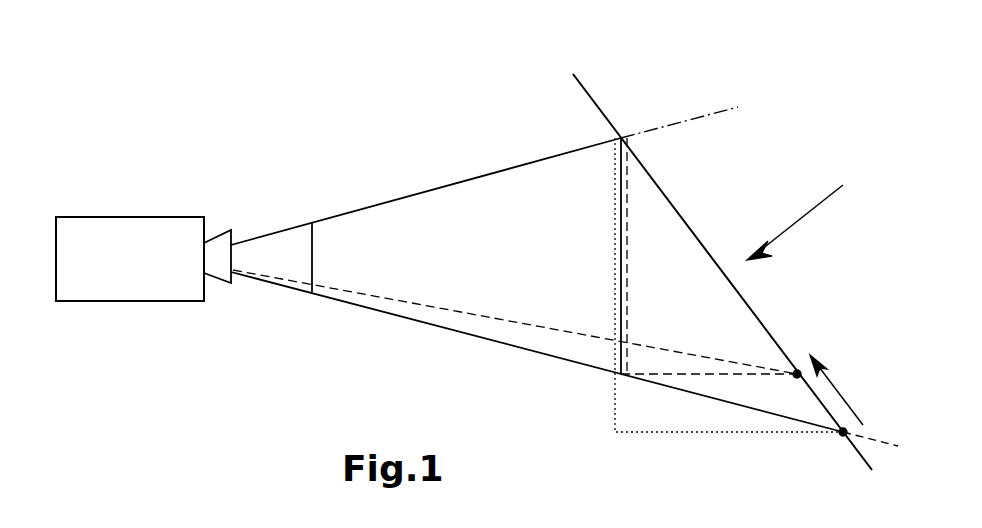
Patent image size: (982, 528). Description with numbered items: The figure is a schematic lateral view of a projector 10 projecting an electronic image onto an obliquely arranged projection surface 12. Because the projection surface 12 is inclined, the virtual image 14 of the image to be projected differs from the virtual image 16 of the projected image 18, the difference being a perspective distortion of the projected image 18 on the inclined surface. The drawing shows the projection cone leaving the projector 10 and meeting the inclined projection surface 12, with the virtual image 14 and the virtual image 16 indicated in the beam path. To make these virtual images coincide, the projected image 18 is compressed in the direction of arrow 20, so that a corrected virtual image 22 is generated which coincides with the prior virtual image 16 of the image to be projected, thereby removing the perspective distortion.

The projector 10 is at (102, 243).
The projection surface 12 is at (595, 98).
The virtual image of the image to be projected 14 is at (615, 403).
The virtual image of the projected image 16 is at (313, 250).
The projected image 18 is at (811, 210).
The arrow 20 is at (838, 392).
The corrected virtual image 22 is at (625, 255).